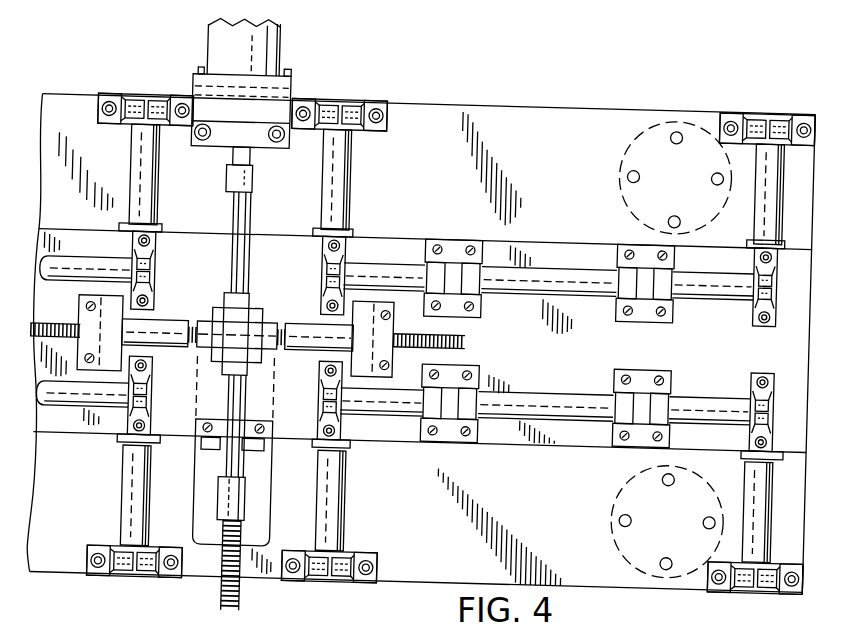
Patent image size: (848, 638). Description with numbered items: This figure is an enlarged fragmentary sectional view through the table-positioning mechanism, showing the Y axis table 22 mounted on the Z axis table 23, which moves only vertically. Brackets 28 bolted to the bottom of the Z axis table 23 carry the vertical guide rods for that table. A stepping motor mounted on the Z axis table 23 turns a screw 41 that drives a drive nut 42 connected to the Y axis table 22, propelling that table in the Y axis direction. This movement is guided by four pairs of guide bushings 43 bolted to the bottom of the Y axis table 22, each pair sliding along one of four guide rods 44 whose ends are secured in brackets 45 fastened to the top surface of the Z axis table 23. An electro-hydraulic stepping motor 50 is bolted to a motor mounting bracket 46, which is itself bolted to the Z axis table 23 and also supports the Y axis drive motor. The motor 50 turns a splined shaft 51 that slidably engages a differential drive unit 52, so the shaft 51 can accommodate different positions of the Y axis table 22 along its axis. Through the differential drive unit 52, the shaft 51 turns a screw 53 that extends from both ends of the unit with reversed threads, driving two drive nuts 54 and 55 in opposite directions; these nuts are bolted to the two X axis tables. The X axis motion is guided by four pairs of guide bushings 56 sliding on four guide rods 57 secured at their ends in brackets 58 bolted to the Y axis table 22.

The Y axis table 22 is at (525, 442).
The Z axis table 23 is at (497, 104).
The brackets 28 is at (647, 118).
The screw 41 is at (247, 602).
The drive nut 42 is at (247, 499).
The guide bushings 43 is at (154, 231).
The guide rods 44 is at (128, 164).
The brackets 45 is at (100, 109).
The motor mounting bracket 46 is at (270, 112).
The electro-hydraulic stepping motor 50 is at (262, 47).
The splined shaft 51 is at (244, 209).
The differential drive unit 52 is at (249, 319).
The screw 53 is at (465, 343).
The drive nut 54 is at (164, 328).
The drive nut 55 is at (298, 355).
The guide bushings 56 is at (479, 293).
The guide rods 57 is at (116, 277).
The brackets 58 is at (153, 252).